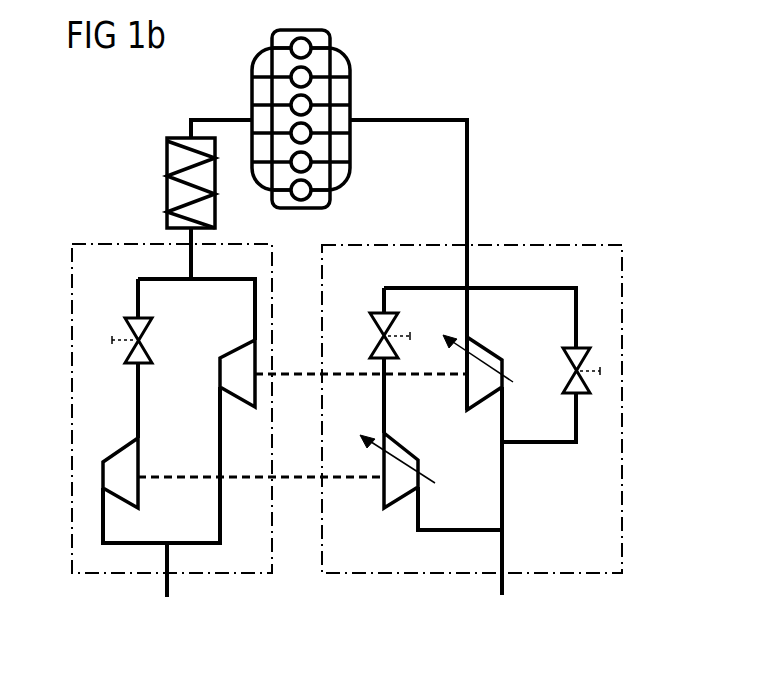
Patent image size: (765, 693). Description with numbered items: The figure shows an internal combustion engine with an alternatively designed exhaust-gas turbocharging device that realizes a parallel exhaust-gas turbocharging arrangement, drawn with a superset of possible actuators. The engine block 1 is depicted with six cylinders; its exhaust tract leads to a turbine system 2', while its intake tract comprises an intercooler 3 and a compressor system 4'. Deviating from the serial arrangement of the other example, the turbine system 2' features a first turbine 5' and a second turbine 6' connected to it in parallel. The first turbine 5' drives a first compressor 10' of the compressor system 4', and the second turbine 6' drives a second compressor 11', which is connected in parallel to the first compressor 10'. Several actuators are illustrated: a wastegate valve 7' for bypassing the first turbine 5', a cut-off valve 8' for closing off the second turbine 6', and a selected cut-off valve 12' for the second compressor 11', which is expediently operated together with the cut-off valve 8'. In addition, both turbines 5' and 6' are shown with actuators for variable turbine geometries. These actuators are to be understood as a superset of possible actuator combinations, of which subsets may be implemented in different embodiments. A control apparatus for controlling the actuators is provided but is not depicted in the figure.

The engine block 1 is at (330, 196).
The turbine system 2' is at (472, 379).
The intercooler 3 is at (167, 150).
The compressor system 4' is at (172, 379).
The first turbine 5' is at (466, 376).
The second turbine 6' is at (385, 479).
The wastegate valve 7' is at (561, 370).
The cut-off valve 8' is at (370, 335).
The first compressor 10' is at (209, 373).
The second compressor 11' is at (156, 479).
The cut-off valve 12' is at (159, 340).